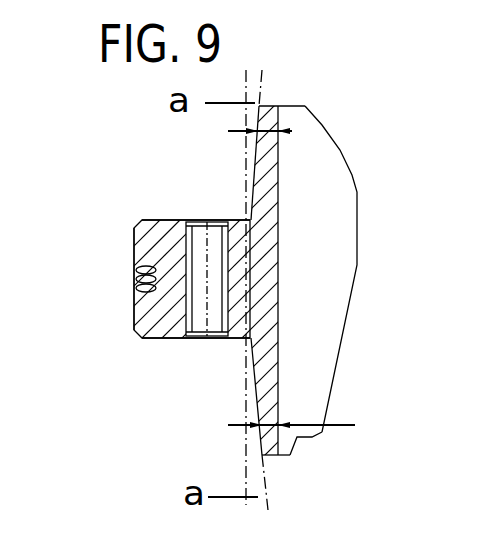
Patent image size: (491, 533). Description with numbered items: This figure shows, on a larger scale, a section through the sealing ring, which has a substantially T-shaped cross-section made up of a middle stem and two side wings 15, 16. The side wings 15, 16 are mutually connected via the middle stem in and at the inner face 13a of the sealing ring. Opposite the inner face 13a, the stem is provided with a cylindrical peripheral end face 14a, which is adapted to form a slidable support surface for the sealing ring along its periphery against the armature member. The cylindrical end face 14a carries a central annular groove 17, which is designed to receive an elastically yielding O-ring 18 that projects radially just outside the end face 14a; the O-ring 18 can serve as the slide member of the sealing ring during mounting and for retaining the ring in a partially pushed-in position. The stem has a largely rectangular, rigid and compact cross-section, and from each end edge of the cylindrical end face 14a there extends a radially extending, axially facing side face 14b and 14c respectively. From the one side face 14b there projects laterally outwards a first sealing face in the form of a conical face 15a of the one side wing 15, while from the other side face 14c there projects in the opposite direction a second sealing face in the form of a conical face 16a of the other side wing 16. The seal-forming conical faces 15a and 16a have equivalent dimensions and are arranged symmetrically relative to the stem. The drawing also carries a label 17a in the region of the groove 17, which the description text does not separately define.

The inner face 13a is at (288, 275).
The cylindrical end face 14a is at (133, 250).
The side face 14b is at (173, 218).
The side face 14c is at (163, 342).
The side wing 15 is at (270, 201).
The conical face 15a is at (270, 155).
The side wing 16 is at (280, 357).
The conical face 16a is at (280, 400).
The central annular groove 17 is at (147, 218).
The bolt 17a is at (230, 302).
The O-ring 18 is at (155, 278).